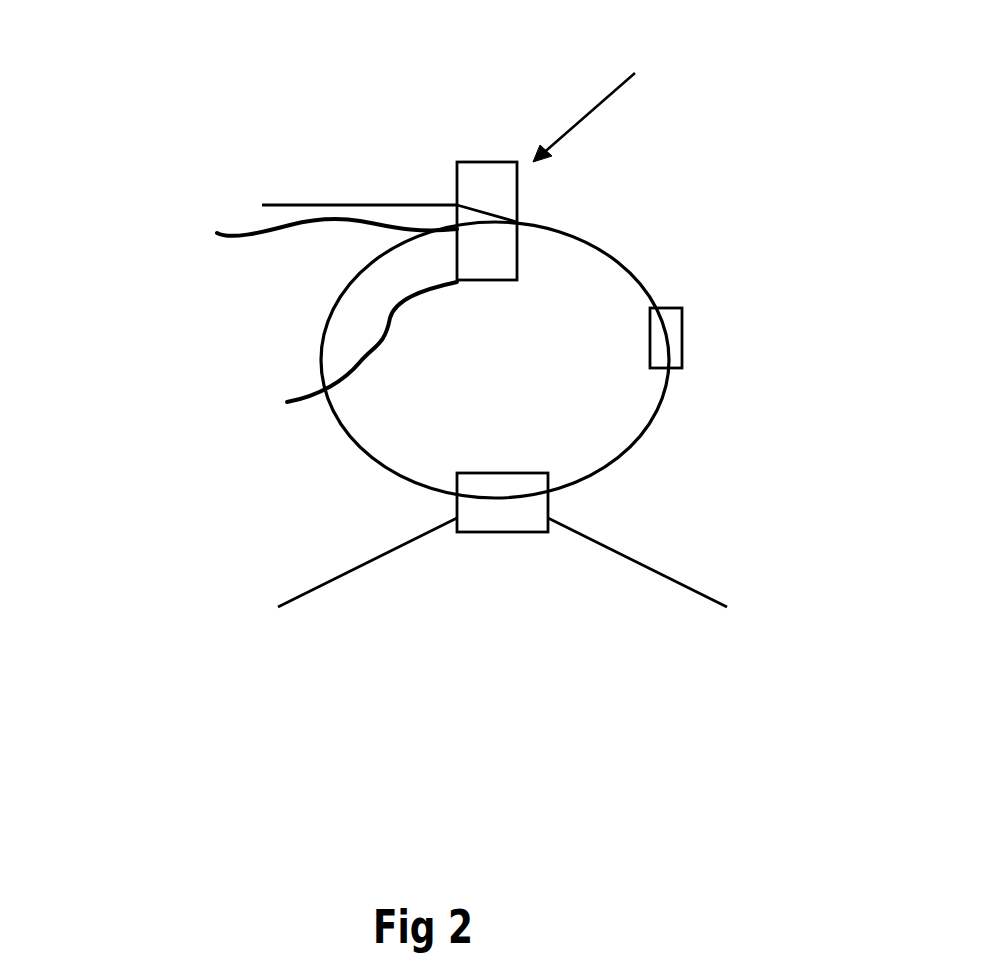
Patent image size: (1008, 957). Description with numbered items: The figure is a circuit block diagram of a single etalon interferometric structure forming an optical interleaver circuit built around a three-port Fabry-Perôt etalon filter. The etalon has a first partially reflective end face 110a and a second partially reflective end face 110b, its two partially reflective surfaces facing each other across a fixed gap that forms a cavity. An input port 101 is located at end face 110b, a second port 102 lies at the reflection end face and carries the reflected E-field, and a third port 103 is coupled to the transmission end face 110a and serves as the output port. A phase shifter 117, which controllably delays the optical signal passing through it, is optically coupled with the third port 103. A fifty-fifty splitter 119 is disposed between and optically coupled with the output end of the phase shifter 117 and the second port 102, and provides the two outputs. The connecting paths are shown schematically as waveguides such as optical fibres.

The input port 101 is at (457, 206).
The second port 102 is at (246, 263).
The third port 103 is at (532, 220).
The first partially reflective end face 110a is at (518, 160).
The second partially reflective end face 110b is at (325, 357).
The phase shifter 117 is at (668, 313).
The 50/50 splitter 119 is at (527, 508).